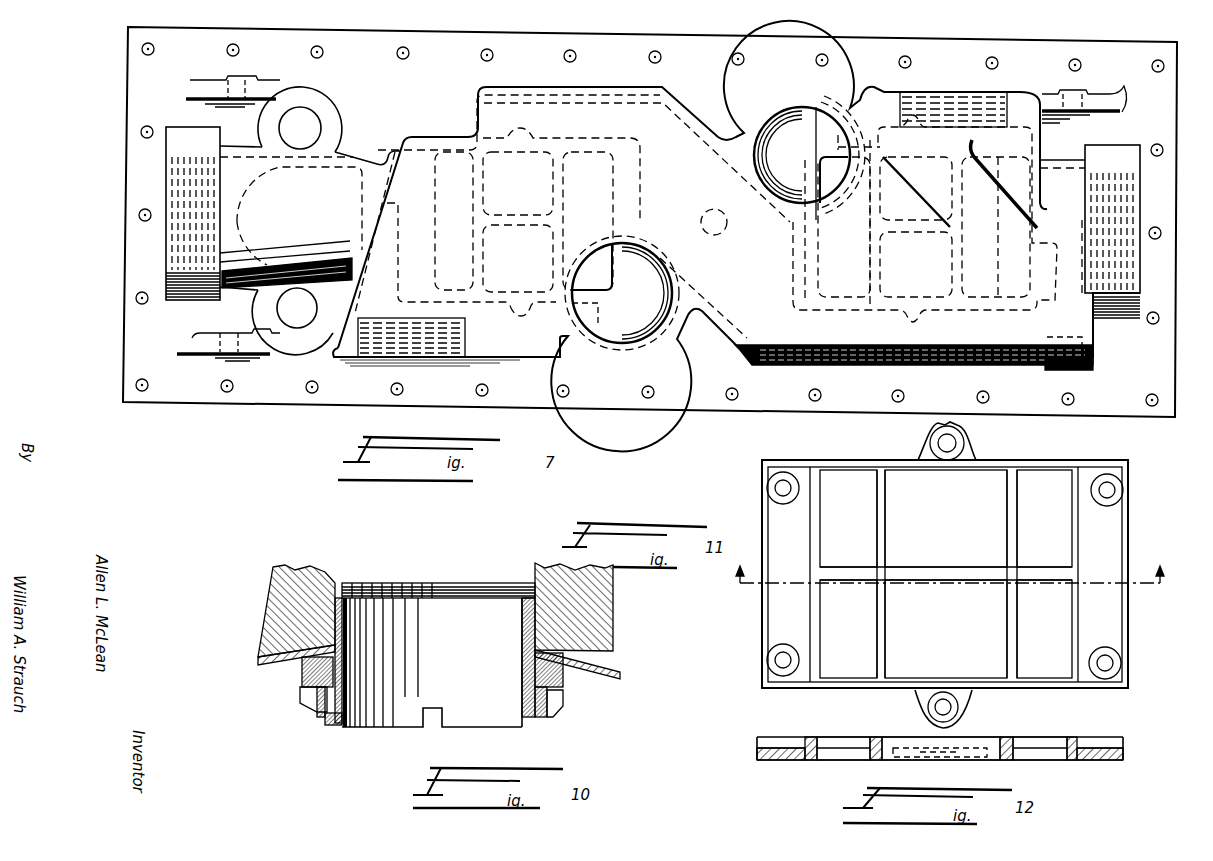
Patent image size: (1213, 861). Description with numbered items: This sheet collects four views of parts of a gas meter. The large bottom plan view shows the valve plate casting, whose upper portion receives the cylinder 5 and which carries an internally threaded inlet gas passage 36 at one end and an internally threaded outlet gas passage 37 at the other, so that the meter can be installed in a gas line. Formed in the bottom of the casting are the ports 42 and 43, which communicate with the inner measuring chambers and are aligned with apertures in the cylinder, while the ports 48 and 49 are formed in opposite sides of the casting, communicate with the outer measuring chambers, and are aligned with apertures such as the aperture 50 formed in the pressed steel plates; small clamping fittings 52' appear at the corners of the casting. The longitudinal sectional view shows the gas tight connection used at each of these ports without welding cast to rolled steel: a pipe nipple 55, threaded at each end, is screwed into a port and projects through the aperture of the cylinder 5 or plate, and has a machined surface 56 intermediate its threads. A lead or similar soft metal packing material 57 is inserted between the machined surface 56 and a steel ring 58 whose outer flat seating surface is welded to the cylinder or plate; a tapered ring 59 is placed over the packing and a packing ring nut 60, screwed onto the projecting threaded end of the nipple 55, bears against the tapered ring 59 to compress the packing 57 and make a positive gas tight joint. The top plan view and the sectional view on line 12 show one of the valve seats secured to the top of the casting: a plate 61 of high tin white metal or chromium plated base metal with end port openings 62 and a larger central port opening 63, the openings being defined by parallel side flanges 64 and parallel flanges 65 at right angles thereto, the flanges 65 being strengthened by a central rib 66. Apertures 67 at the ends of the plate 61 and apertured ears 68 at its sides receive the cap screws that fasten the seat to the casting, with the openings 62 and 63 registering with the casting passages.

In FIG. 7, the inlet gas passage 36 is at (165, 233).
In FIG. 7, the outlet gas passage 37 is at (1132, 223).
In FIG. 7, the port 42 is at (633, 318).
In FIG. 7, the port 43 is at (796, 135).
In FIG. 7, the port 48 is at (378, 343).
In FIG. 7, the port 49 is at (924, 108).
In FIG. 7, the clamping bracket 52' is at (650, 228).
In FIG. 10, the cylinder 5 is at (260, 662).
In FIG. 10, the aperture 50 is at (547, 573).
In FIG. 10, the pipe nipple 55 is at (523, 633).
In FIG. 10, the machined surface 56 is at (523, 667).
In FIG. 10, the packing material 57 is at (366, 657).
In FIG. 10, the steel ring 58 is at (618, 673).
In FIG. 10, the tapered ring 59 is at (300, 686).
In FIG. 10, the packing ring nut 60 is at (556, 710).
In FIG. 11, the plate 61 is at (1105, 615).
In FIG. 12, the plate 61 is at (1010, 745).
In FIG. 11, the end port openings 62 is at (946, 574).
In FIG. 12, the end port openings 62 is at (845, 745).
In FIG. 11, the central port opening 63 is at (946, 518).
In FIG. 11, the side flanges 64 is at (1105, 455).
In FIG. 11, the flanges 65 is at (857, 615).
In FIG. 12, the flanges 65 is at (812, 737).
In FIG. 11, the central rib 66 is at (965, 576).
In FIG. 12, the central rib 66 is at (878, 737).
In FIG. 11, the apertures 67 is at (767, 489).
In FIG. 11, the apertured ears 68 is at (962, 436).
In FIG. 11, the section line 12— 12 is at (943, 575).